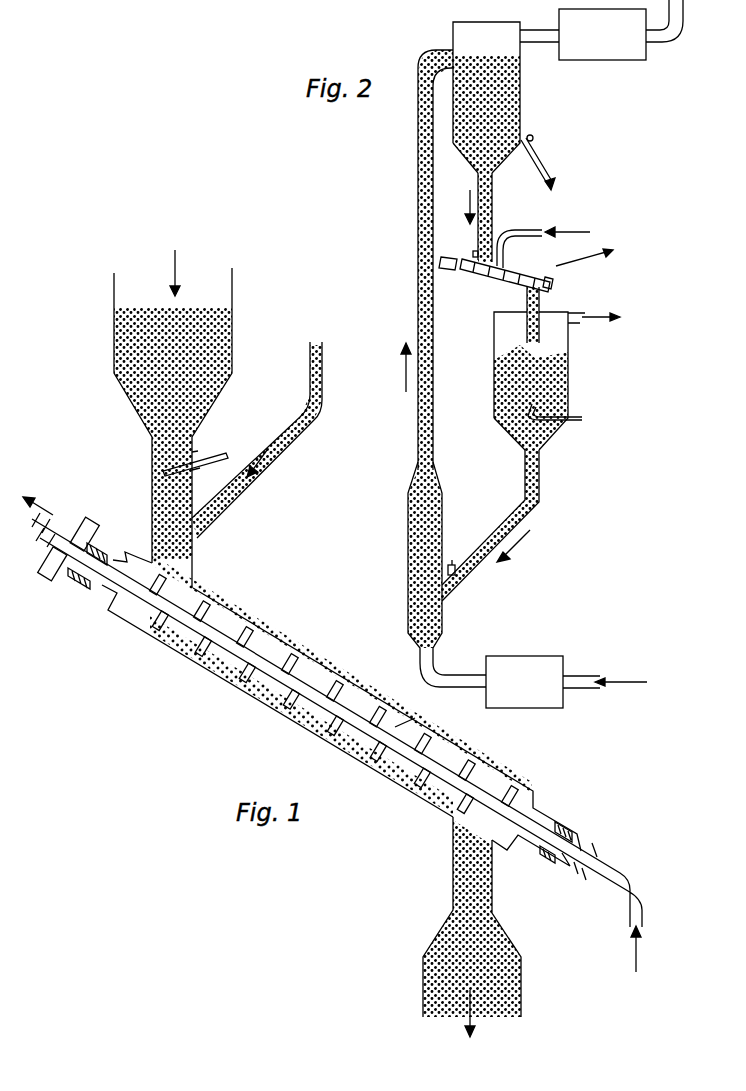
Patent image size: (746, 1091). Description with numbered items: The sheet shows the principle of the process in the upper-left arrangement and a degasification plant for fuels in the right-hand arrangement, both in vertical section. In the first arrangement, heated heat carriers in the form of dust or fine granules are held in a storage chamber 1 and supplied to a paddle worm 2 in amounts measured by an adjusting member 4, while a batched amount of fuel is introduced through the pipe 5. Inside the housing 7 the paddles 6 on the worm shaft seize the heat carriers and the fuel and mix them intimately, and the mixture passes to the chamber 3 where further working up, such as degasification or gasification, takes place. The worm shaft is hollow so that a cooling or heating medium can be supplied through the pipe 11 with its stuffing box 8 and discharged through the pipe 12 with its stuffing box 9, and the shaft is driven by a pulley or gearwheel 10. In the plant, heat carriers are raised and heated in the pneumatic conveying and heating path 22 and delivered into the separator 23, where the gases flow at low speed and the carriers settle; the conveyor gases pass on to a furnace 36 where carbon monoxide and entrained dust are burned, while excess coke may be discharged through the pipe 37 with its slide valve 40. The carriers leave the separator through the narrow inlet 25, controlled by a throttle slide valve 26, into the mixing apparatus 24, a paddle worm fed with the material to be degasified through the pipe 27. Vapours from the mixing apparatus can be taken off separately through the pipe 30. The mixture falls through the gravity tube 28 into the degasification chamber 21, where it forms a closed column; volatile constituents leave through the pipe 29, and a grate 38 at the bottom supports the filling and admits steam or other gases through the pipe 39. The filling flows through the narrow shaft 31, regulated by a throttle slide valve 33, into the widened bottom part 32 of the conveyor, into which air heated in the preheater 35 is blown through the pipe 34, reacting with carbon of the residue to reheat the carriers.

In FIG. 1, the storage chamber 1 is at (228, 320).
In FIG. 1, the paddle worm 2 is at (337, 723).
In FIG. 1, the chamber 3 is at (512, 982).
In FIG. 1, the adjusting member 4 is at (218, 452).
In FIG. 1, the pipe 5 is at (318, 375).
In FIG. 1, the paddles 6 is at (328, 683).
In FIG. 1, the housing 7 is at (300, 725).
In FIG. 1, the stuffing box 8 is at (594, 852).
In FIG. 1, the stuffing box 9 is at (50, 527).
In FIG. 1, the pulley or gearwheel 10 is at (60, 580).
In FIG. 1, the pipe 11 is at (631, 903).
In FIG. 1, the pipe 12 is at (40, 538).
In FIG. 2, the degasification chamber 21 is at (565, 376).
In FIG. 2, the pneumatic conveying and heating path 22 is at (432, 408).
In FIG. 2, the separator 23 is at (512, 84).
In FIG. 2, the mixing apparatus 24 is at (512, 268).
In FIG. 2, the inlet 25 is at (492, 202).
In FIG. 2, the throttle slide valve 26 is at (472, 250).
In FIG. 2, the pipe 27 is at (540, 223).
In FIG. 2, the gravity tube 28 is at (540, 308).
In FIG. 2, the pipe 29 is at (580, 324).
In FIG. 2, the pipe 30 is at (566, 258).
In FIG. 2, the shaft 31 is at (540, 493).
In FIG. 2, the bottom part 32 is at (410, 537).
In FIG. 2, the throttle slide valve 33 is at (455, 565).
In FIG. 2, the pipe 34 is at (445, 676).
In FIG. 2, the preheater 35 is at (530, 660).
In FIG. 2, the furnace 36 is at (626, 48).
In FIG. 2, the pipe 37 is at (545, 162).
In FIG. 2, the grate 38 is at (545, 412).
In FIG. 2, the pipe 39 is at (575, 424).
In FIG. 2, the slide valve 40 is at (534, 133).